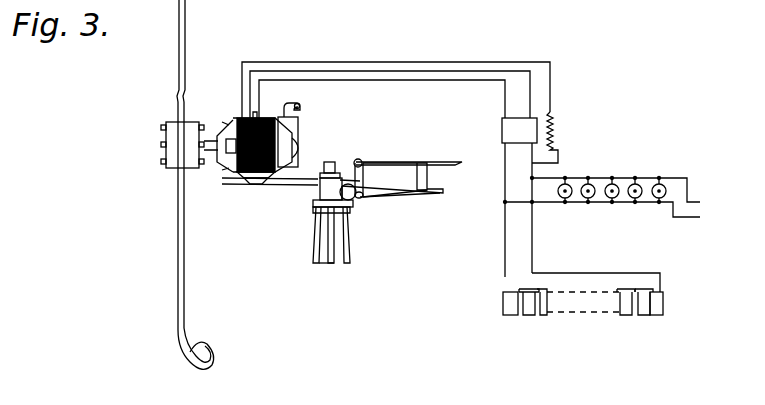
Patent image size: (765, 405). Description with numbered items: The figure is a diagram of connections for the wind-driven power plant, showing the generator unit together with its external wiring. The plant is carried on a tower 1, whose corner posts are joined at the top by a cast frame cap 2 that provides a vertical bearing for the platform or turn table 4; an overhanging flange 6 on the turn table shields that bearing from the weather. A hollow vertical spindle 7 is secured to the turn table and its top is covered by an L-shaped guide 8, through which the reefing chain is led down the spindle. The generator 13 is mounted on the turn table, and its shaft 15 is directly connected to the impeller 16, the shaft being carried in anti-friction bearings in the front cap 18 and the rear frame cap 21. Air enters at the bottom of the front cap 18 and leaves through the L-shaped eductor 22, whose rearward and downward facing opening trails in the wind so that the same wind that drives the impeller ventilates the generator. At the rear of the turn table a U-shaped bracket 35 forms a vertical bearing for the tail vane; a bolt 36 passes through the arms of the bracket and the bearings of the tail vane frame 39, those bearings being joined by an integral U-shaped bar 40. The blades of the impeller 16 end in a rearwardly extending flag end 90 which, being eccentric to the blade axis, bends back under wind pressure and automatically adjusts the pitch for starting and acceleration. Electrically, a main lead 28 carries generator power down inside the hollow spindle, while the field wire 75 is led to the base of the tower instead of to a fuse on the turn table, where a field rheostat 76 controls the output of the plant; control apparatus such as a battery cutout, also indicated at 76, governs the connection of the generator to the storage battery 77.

The tower 1 is at (348, 246).
The cast frame cap 2 is at (320, 213).
The platform or turn table 4 is at (280, 186).
The overhanging flange 6 is at (345, 205).
The vertical mast or spindle 7 is at (330, 262).
The cap or L-shaped guide 8 is at (331, 164).
The generator 13 is at (262, 184).
The shaft 15 is at (197, 158).
The impeller 16 is at (173, 62).
The front cap 18 is at (222, 158).
The rear frame cap 21 is at (298, 128).
The L-shaped eductor 22 is at (300, 109).
The main lead 28 is at (608, 176).
The U-shaped bracket 35 is at (360, 160).
The spindle or bolt 36 is at (375, 179).
The frame of the tail vane 39 is at (400, 162).
The integral bar of U-shape 40 is at (390, 194).
The field wire 75 is at (383, 62).
The field rheostat 76 is at (504, 125).
The storage battery 77 is at (583, 309).
The flag end 90 is at (195, 353).